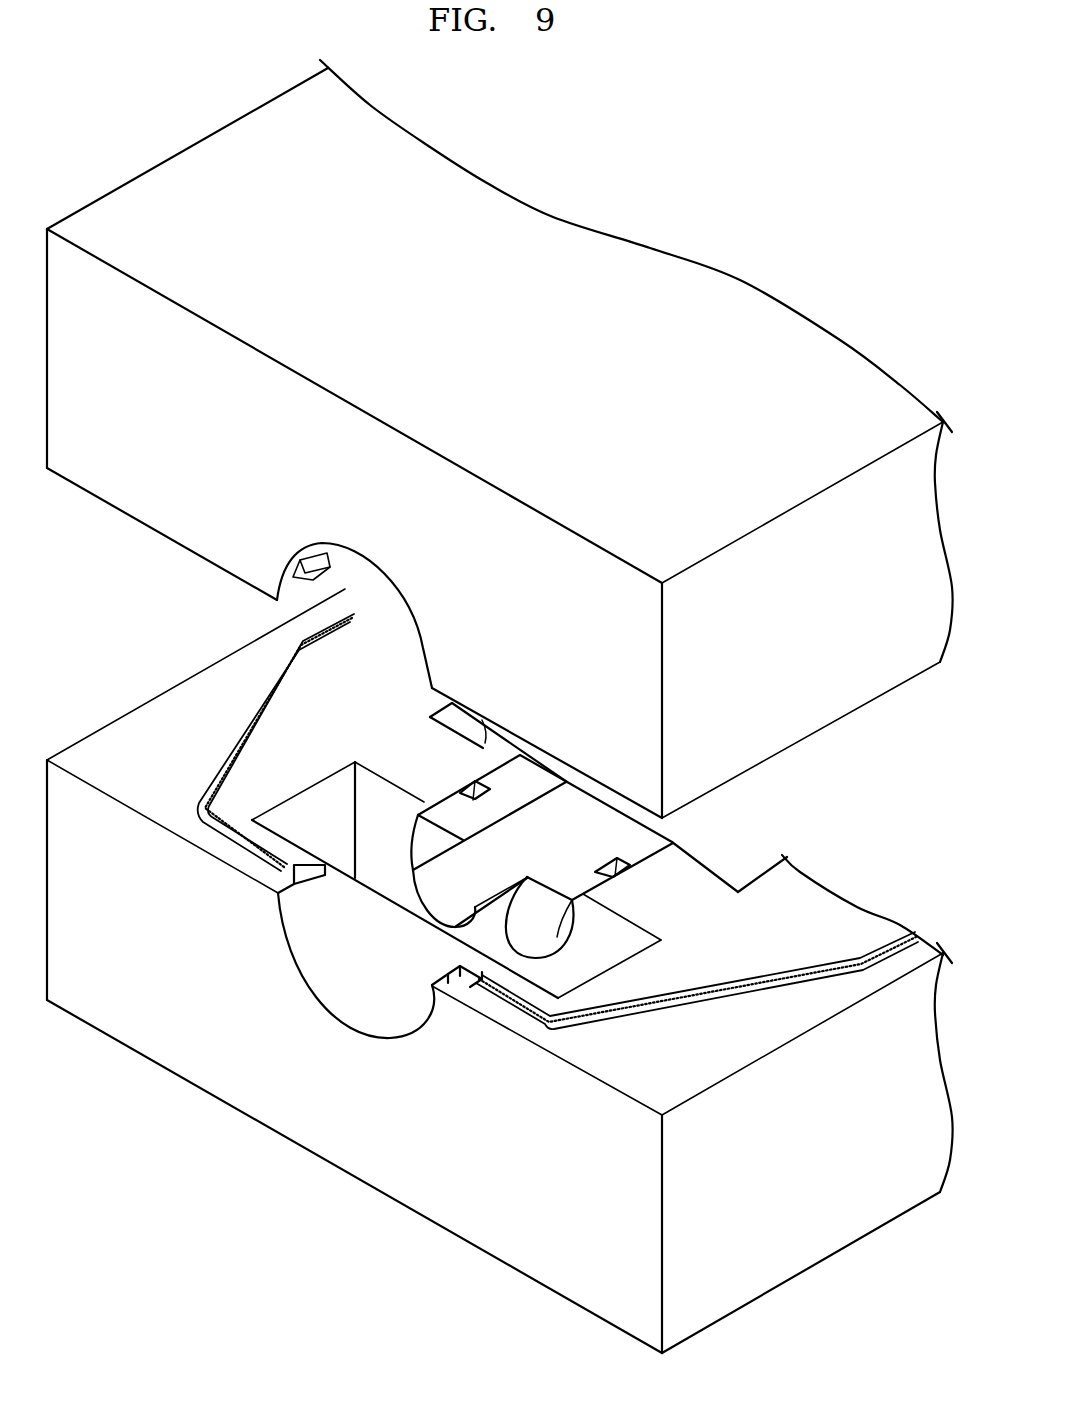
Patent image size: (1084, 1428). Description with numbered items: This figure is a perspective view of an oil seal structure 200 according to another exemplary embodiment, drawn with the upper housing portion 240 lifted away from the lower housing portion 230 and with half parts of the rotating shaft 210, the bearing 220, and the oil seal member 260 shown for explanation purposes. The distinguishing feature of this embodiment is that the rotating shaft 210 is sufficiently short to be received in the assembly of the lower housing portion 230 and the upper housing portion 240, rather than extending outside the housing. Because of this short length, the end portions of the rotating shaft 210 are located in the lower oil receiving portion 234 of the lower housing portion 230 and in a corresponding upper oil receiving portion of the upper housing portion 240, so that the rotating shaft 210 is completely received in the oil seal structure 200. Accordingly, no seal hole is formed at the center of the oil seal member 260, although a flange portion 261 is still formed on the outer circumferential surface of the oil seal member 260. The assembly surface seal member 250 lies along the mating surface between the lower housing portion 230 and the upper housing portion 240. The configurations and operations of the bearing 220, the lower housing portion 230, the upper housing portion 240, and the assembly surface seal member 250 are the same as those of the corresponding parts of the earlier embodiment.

The oil seal structure 200 is at (745, 258).
The rotating shaft 210 is at (612, 800).
The bearing 220 is at (650, 843).
The lower housing portion 230 is at (272, 1105).
The lower oil receiving portion 234 is at (398, 816).
The upper housing portion 240 is at (162, 519).
The assembly surface seal member 250 is at (270, 700).
The oil seal member 260 is at (377, 1023).
The flange portion 261 is at (462, 972).